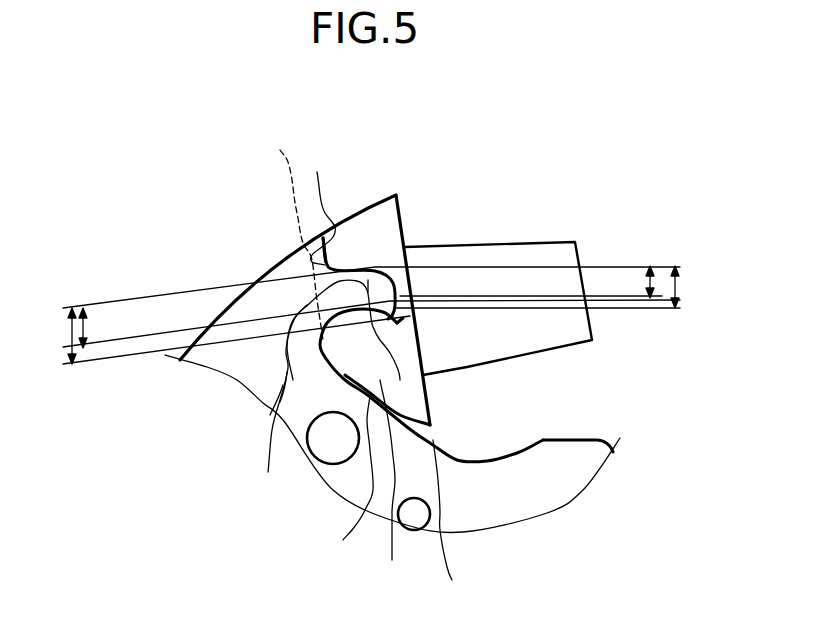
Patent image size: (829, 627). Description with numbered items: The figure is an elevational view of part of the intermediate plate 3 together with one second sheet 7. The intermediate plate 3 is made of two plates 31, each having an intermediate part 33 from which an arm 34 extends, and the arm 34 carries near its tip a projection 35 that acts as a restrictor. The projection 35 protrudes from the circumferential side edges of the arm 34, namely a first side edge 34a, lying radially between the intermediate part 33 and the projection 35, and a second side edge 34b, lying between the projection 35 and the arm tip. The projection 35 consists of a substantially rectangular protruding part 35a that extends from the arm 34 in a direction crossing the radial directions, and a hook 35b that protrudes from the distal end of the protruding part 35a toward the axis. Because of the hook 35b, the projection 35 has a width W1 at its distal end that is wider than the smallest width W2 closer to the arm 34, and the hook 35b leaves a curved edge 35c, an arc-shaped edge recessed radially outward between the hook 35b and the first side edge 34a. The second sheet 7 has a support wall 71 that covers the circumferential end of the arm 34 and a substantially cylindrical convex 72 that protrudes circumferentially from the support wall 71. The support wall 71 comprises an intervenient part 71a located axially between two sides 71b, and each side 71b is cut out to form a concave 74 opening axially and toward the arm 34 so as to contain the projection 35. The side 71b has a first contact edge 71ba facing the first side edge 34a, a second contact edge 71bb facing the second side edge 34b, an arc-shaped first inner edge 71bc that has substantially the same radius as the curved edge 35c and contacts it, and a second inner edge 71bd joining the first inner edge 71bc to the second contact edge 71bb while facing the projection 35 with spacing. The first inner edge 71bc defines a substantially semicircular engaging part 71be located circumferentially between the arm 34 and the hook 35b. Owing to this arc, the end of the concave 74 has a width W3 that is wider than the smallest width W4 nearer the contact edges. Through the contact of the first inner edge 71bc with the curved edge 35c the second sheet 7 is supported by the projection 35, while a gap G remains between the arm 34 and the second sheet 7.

The intermediate plate 3 is at (340, 506).
The second sheet 7 is at (382, 187).
The plate 31 is at (278, 279).
The intermediate part 33 is at (535, 508).
The arm 34 is at (270, 415).
The first side edge 34a is at (450, 524).
The second side edge 34b is at (318, 208).
The projection 35 is at (366, 262).
The protruding part 35a is at (368, 280).
The hook 35b is at (394, 485).
The curved edge 35c is at (278, 404).
The support wall 71 is at (358, 232).
The intervenient part 71a is at (291, 230).
The side 71b is at (402, 288).
The first contact edge 71ba is at (344, 481).
The second contact edge 71bb is at (326, 264).
The first inner edge 71bc is at (322, 325).
The second inner edge 71bd is at (403, 318).
The engaging part 71be is at (280, 402).
The convex 72 is at (545, 247).
The concave 74 is at (417, 327).
The gap G is at (448, 432).
The width at distal end of projection W1 is at (698, 287).
The smallest width of projection W2 is at (629, 283).
The width at end of concave W3 is at (49, 336).
The smallest width of concave W4 is at (106, 328).